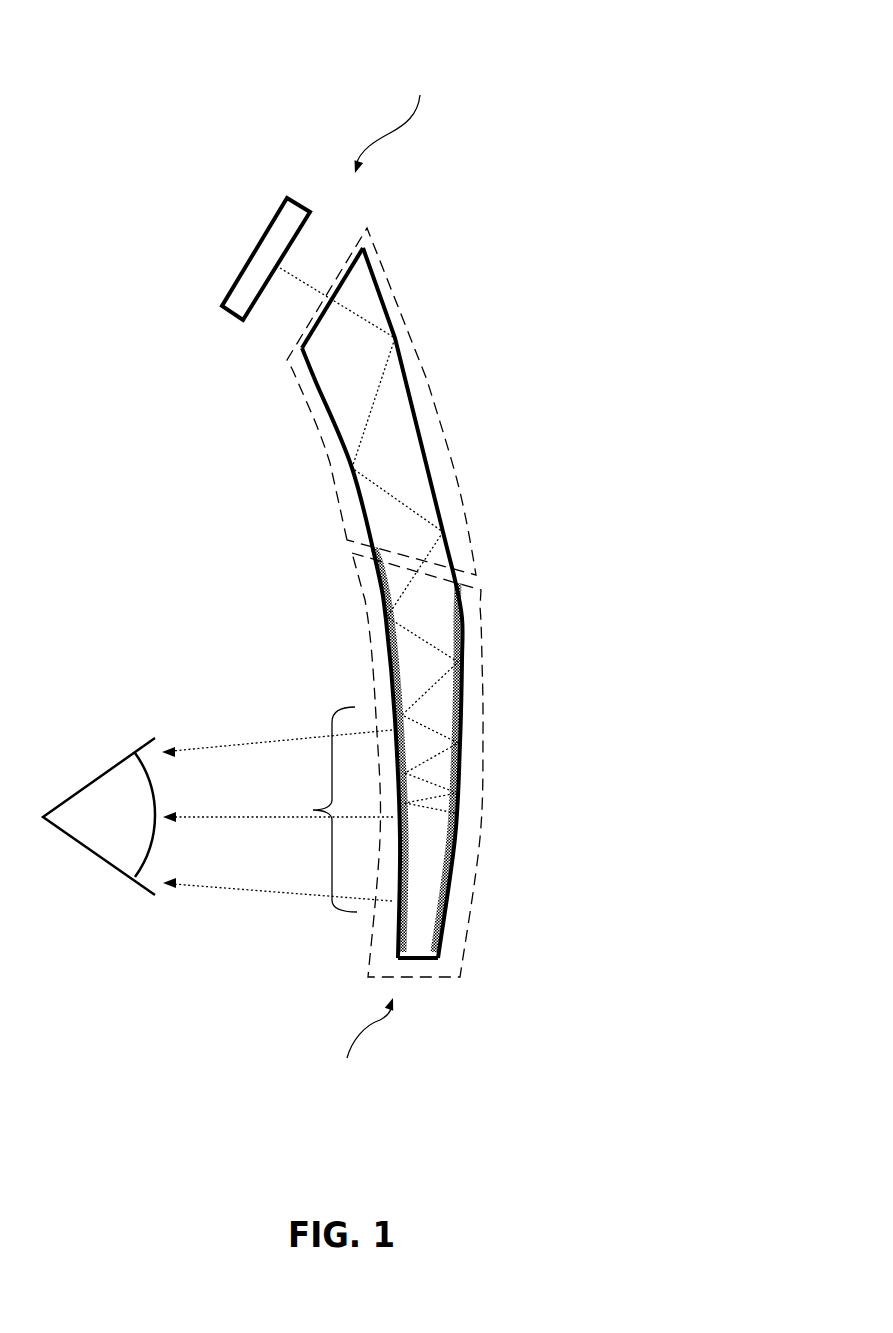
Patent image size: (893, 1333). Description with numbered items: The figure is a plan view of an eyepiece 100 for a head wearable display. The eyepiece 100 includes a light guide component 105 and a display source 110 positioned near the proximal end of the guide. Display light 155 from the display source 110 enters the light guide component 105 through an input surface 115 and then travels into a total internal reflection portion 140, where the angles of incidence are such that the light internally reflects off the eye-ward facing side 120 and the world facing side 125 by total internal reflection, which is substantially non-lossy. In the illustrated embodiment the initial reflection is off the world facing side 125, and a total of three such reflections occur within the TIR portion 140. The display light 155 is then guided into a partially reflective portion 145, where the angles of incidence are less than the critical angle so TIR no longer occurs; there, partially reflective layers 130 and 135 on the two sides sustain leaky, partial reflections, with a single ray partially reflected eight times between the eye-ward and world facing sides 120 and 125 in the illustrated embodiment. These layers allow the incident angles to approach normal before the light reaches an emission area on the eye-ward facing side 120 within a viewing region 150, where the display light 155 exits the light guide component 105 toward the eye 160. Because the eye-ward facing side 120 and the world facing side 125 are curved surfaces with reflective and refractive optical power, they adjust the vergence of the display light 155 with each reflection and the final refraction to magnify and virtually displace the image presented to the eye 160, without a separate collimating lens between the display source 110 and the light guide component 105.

The eyepiece 100 is at (643, 68).
The light guide component 105 is at (574, 323).
The display source 110 is at (285, 207).
The input surface 115 is at (314, 326).
The eye-ward facing side 120 is at (315, 479).
The world facing side 125 is at (480, 449).
The partially reflective layer 130 is at (380, 627).
The partially reflective layer 135 is at (467, 648).
The total internal reflection portion 140 is at (388, 283).
The partially reflective portion 145 is at (468, 925).
The viewing region 150 is at (313, 810).
The display light 155 is at (295, 270).
The eye 160 is at (125, 823).